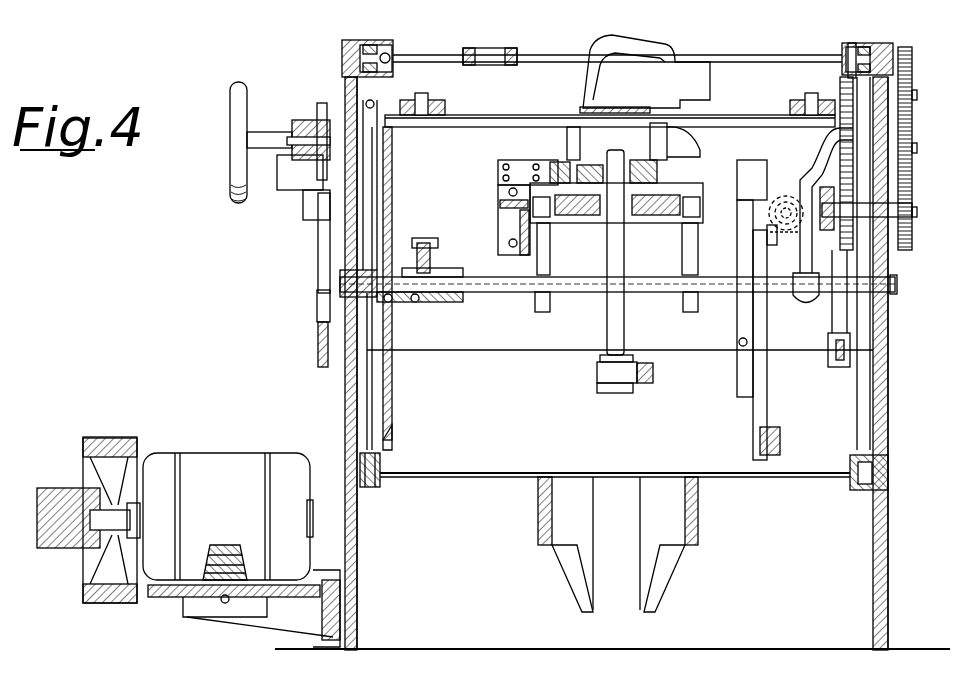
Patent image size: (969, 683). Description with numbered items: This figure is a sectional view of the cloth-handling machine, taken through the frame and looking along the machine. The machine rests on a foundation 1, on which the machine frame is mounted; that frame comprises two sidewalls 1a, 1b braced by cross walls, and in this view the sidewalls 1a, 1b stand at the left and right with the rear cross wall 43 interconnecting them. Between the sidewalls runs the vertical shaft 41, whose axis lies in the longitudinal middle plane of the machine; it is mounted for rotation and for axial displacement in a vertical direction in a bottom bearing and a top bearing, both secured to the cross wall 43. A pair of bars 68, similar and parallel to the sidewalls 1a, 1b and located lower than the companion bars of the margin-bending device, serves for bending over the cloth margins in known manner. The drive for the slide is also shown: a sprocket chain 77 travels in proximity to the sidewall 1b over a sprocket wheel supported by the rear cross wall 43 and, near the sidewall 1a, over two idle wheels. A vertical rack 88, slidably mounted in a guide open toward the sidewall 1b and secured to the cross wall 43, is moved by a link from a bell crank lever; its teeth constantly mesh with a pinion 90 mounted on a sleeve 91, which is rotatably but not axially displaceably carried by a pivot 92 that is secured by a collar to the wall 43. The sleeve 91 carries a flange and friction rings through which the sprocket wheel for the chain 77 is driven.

The foundation 1 is at (880, 585).
The sidewall 1a is at (345, 97).
The sidewall 1b is at (912, 88).
The vertical shaft 41 is at (608, 328).
The cross wall 43 is at (565, 214).
The bars 68 is at (440, 110).
The sprocket chain 77 is at (535, 302).
The vertical rack 88 is at (740, 180).
The pinion 90 is at (786, 197).
The sleeve 91 is at (786, 230).
The pivot 92 is at (770, 235).